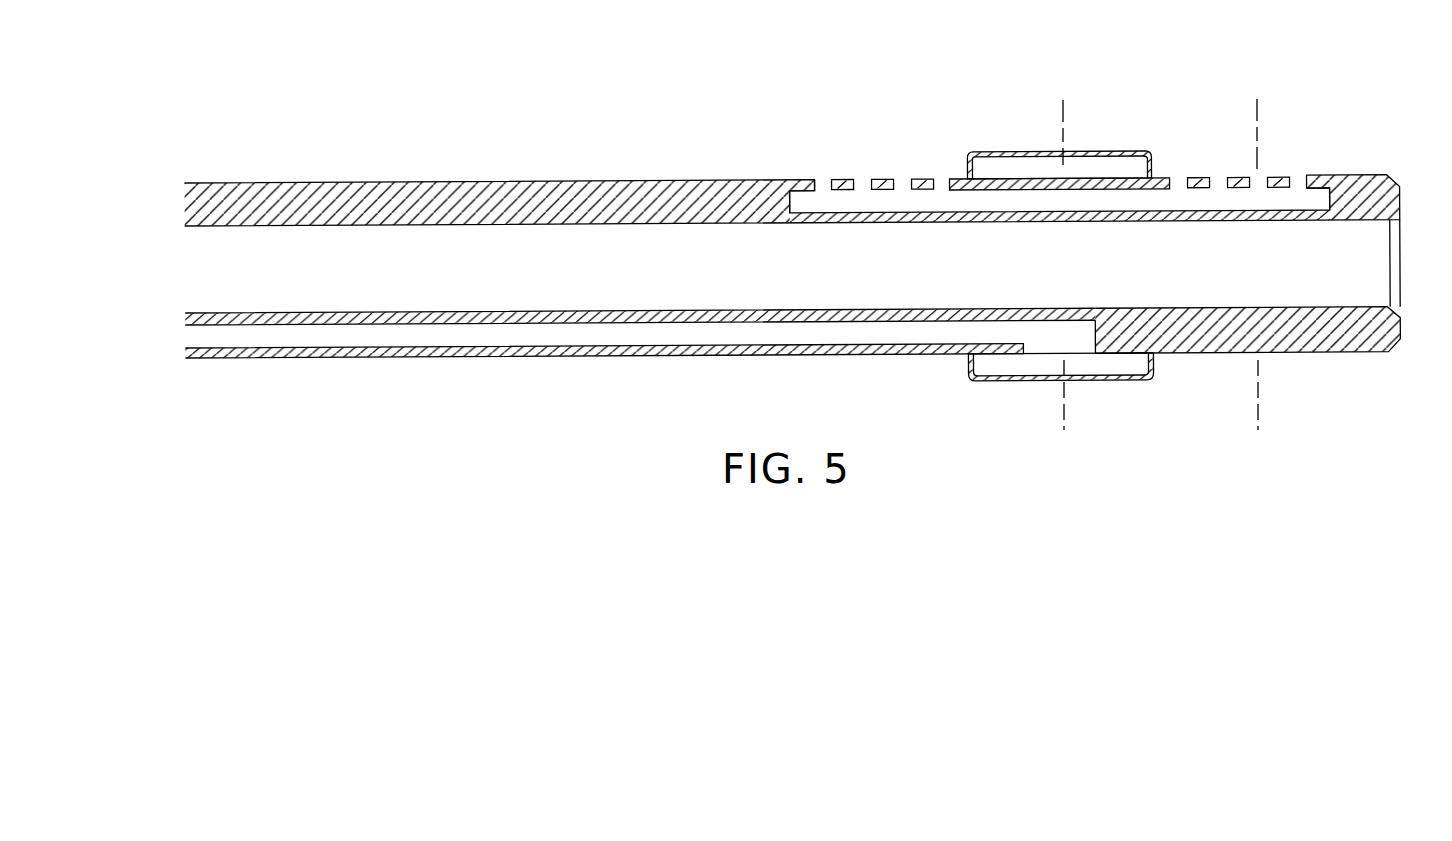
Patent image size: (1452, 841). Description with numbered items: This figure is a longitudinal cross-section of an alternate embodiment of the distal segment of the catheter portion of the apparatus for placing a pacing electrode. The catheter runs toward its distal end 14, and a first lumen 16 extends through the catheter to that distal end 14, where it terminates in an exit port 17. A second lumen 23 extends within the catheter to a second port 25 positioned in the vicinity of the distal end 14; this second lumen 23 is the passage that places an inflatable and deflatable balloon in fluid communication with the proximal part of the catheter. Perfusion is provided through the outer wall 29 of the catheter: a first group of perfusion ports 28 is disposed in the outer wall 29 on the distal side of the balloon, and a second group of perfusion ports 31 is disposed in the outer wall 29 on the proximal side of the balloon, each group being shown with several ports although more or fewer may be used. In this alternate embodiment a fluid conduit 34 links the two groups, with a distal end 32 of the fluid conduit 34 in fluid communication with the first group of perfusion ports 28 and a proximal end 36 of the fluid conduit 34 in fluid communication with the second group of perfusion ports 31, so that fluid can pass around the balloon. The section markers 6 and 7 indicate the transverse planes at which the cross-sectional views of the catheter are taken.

The distal end 14 is at (1350, 354).
The first lumen 16 is at (193, 278).
The exit port 17 is at (1393, 263).
The second lumen 23 is at (670, 335).
The second port 25 is at (1045, 342).
The first group of perfusion ports 28 is at (1218, 177).
The outer wall 29 is at (804, 178).
The second group of perfusion ports 31 is at (943, 177).
The distal end of fluid conduit 32 is at (1323, 198).
The fluid conduit 34 is at (997, 200).
The proximal end of fluid conduit 36 is at (800, 200).
The section line 6- 6 is at (995, 100).
The section line 7- 7 is at (1190, 99).